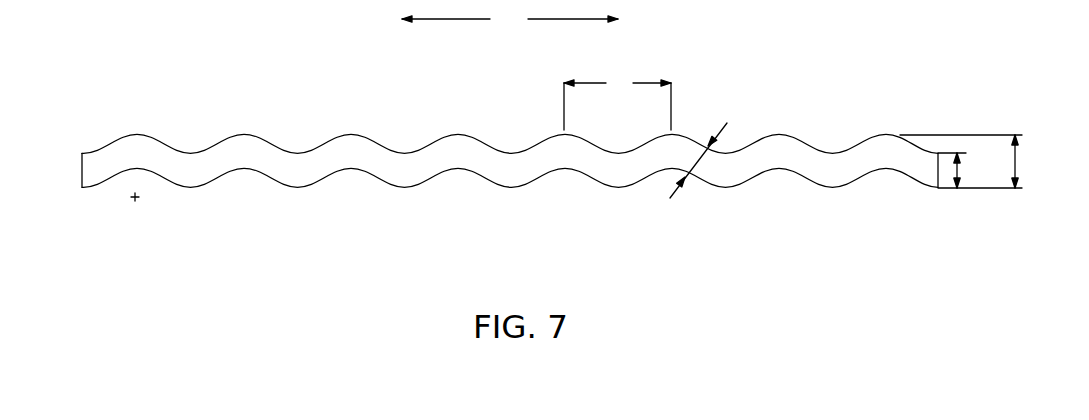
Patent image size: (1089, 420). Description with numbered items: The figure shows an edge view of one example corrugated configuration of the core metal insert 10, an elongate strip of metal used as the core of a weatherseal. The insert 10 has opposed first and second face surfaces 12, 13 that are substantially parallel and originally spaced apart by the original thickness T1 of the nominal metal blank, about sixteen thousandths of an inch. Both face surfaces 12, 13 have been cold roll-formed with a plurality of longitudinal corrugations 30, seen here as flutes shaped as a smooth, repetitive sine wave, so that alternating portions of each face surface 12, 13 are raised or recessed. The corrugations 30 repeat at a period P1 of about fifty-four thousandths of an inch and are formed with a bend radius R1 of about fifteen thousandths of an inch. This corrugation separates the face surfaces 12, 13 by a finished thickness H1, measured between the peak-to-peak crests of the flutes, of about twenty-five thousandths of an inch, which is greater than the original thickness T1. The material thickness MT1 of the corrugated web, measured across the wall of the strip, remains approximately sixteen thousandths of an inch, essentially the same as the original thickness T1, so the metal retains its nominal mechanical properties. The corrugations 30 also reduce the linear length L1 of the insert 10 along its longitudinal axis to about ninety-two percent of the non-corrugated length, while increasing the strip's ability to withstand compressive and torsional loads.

The core metal insert 10 is at (510, 145).
The first face surface 12 is at (510, 97).
The second face surface 13 is at (510, 224).
The longitudinal corrugations 30 is at (500, 170).
The bend radius R1 is at (152, 167).
The linear length L1 is at (510, 21).
The period of the corrugations P1 is at (617, 100).
The material thickness MT1 is at (700, 166).
The original thickness T1 is at (957, 173).
The finished thickness H1 is at (1015, 163).